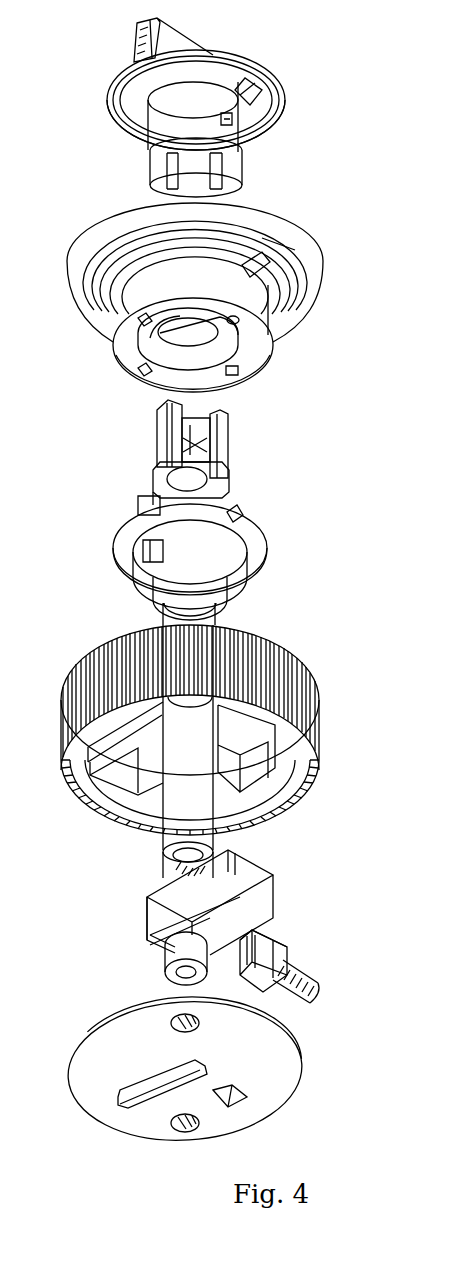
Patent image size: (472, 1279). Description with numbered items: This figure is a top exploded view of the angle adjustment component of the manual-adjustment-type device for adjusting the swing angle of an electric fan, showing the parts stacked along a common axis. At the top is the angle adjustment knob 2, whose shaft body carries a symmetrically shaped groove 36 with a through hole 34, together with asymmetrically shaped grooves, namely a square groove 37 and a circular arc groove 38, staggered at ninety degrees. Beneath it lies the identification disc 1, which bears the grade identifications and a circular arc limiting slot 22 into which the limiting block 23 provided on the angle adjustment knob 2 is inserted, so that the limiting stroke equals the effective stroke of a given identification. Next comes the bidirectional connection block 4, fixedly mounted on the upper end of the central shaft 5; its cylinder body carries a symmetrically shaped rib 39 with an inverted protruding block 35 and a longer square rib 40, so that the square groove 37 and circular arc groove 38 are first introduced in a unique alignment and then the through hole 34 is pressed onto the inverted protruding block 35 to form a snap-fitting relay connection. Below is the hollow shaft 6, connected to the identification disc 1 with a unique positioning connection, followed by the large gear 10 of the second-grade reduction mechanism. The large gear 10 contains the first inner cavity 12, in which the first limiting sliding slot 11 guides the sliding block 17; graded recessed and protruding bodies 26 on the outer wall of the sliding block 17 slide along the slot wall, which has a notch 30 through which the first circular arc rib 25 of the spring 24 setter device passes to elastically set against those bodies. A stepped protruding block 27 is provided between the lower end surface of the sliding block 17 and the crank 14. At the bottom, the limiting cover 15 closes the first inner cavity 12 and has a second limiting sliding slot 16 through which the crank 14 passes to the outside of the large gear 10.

The identification disc 1 is at (273, 232).
The angle adjustment knob 2 is at (140, 70).
The bidirectional connection block 4 is at (212, 447).
The central shaft 5 is at (195, 858).
The hollow shaft 6 is at (188, 608).
The large gear 10 is at (280, 653).
The first limiting sliding slot 11 is at (247, 717).
The first inner cavity 12 is at (152, 797).
The crank 14 is at (187, 952).
The limiting cover 15 is at (208, 1123).
The second limiting sliding slot 16 is at (217, 1092).
The sliding block 17 is at (193, 885).
The limiting slot 22 is at (240, 258).
The limiting block 23 is at (280, 80).
The spring 24 is at (262, 937).
The first circular arc rib 25 is at (273, 960).
The graded recessed and protruding bodies 26 is at (242, 933).
The stepped protruding block 27 is at (153, 919).
The notch 30 is at (313, 733).
The through hole 34 is at (235, 118).
The inverted protruding block 35 is at (222, 418).
The symmetrically shaped groove 36 is at (243, 153).
The square groove 37 is at (152, 153).
The circular arc groove 38 is at (233, 190).
The symmetrically shaped rib 39 is at (213, 438).
The square rib 40 is at (170, 413).